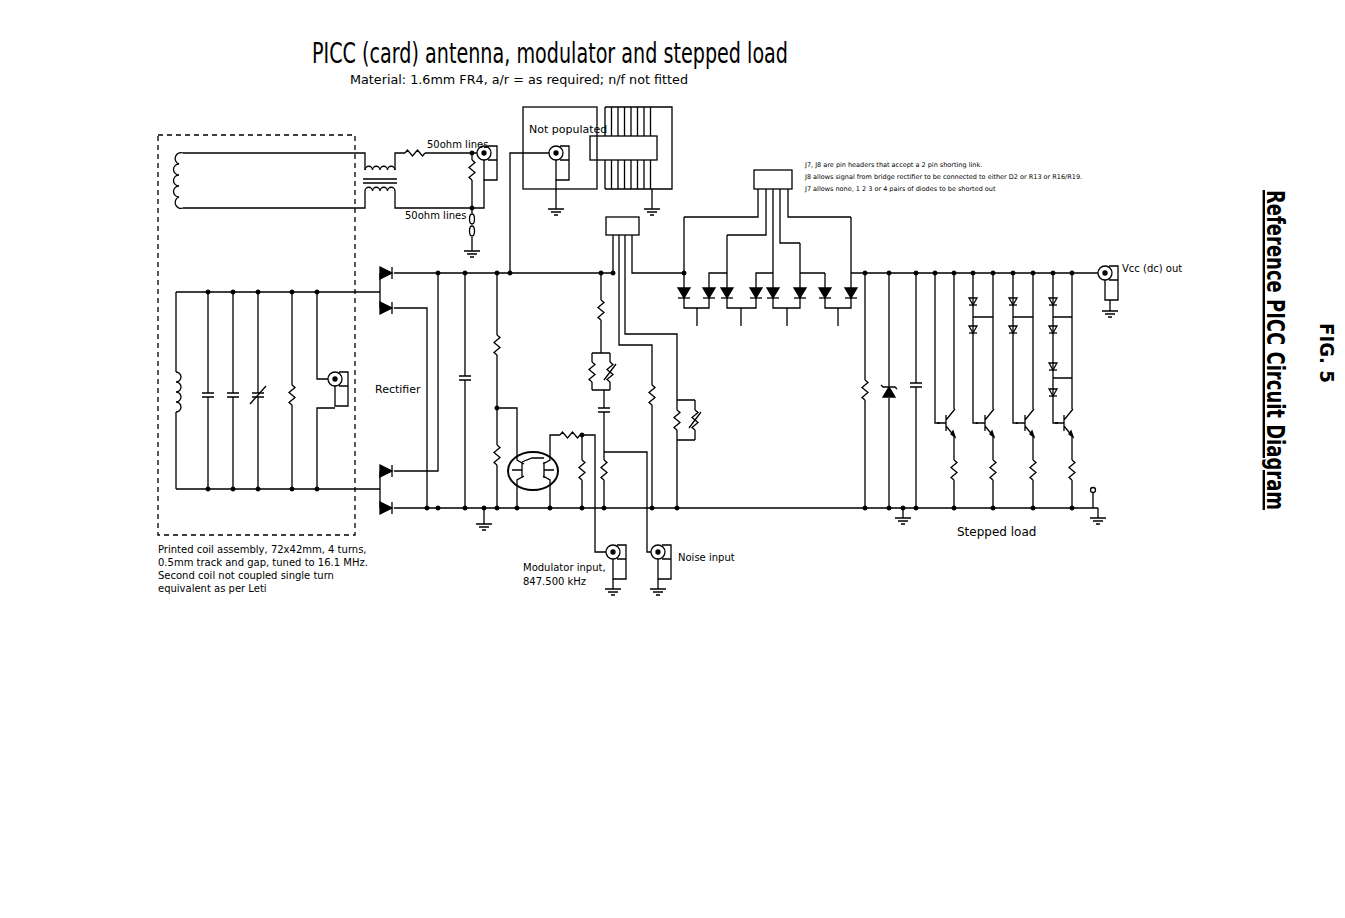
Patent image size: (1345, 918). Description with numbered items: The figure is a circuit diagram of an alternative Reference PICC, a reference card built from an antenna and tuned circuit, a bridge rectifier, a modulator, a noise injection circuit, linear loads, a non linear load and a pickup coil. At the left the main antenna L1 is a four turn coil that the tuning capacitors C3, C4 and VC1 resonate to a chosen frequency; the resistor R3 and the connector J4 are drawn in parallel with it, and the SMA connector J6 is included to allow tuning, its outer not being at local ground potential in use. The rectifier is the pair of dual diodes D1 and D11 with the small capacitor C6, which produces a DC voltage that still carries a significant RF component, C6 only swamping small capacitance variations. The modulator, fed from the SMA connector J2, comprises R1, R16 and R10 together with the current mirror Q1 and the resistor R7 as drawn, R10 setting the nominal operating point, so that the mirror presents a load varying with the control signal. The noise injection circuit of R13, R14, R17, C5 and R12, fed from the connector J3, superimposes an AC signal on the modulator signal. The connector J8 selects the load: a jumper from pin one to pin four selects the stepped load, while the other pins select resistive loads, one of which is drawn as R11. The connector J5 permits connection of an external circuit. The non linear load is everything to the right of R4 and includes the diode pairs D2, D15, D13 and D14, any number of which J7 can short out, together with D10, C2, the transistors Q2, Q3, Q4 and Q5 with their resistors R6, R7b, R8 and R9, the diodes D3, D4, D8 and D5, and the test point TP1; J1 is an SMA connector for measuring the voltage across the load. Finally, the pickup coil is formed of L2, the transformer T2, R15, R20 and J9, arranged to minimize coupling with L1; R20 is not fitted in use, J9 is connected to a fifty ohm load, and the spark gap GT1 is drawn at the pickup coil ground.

The main antenna L1 is at (169, 390).
The pickup coil L2 is at (270, 181).
The transformer T2 is at (423, 180).
The pickup coil resistor R15 is at (441, 153).
The pickup coil resistor R20 is at (465, 180).
The gas discharge tube GT1 is at (466, 232).
The SMA connector J6 is at (487, 151).
The tuning capacitor C3 is at (205, 390).
The tuning capacitor C4 is at (238, 390).
The variable tuning capacitor VC1 is at (268, 390).
The resistor not fitted R3 is at (301, 390).
The SMA connector J4 is at (332, 390).
The dual diode D1 is at (493, 387).
The dual diode D11 is at (736, 398).
The small capacitor C6 is at (460, 390).
The external circuit connector J5 is at (532, 210).
The pickup coil connector J9 is at (631, 161).
The load selection connector J8 is at (645, 301).
The noise injection resistor R13 is at (594, 312).
The noise injection resistor R17 is at (593, 371).
The noise injection resistor R14 is at (616, 371).
The noise injection capacitor C5 is at (610, 421).
The noise injection resistor R12 is at (626, 502).
The resistor 330 R11 is at (645, 444).
The modulator resistor R16 is at (686, 455).
The modulator resistor R1 is at (498, 391).
The dual transistor BCV61C modulator Q1 is at (526, 458).
The operating point resistor R10 is at (581, 486).
The resistor R7 is at (587, 472).
The modulator input SMA connector J2 is at (615, 560).
The noise input connector J3 is at (660, 560).
The diode shorting header J7 is at (767, 216).
The dual diode BAV99 D2 is at (702, 280).
The dual diode BAV99 D15 is at (747, 289).
The dual diode BAV99 D13 is at (796, 293).
The dual diode BAV99 D14 is at (958, 280).
The resistor R4 is at (858, 390).
The zener diode D10 is at (883, 390).
The capacitor 100n C2 is at (925, 390).
The transistor MMBT2222A Q2 is at (945, 395).
The resistor 4k22 R6 is at (963, 480).
The dual diode BAV99 D3 is at (978, 333).
The transistor MMBT2222A Q3 is at (984, 464).
The resistor 4k22 R7b is at (1002, 480).
The dual diode BAV99 D4 is at (1018, 333).
The transistor MMBT2222A Q4 is at (1024, 464).
The resistor 2k R8 is at (1038, 480).
The dual diode BAV99 D8 is at (1058, 333).
The dual diode BAV99 D5 is at (1073, 371).
The transistor MMBT2222A Q5 is at (1063, 464).
The resistor 470 R9 is at (1079, 480).
The test pin ground connection TP1 is at (1132, 502).
The load measurement SMA connector J1 is at (1101, 291).